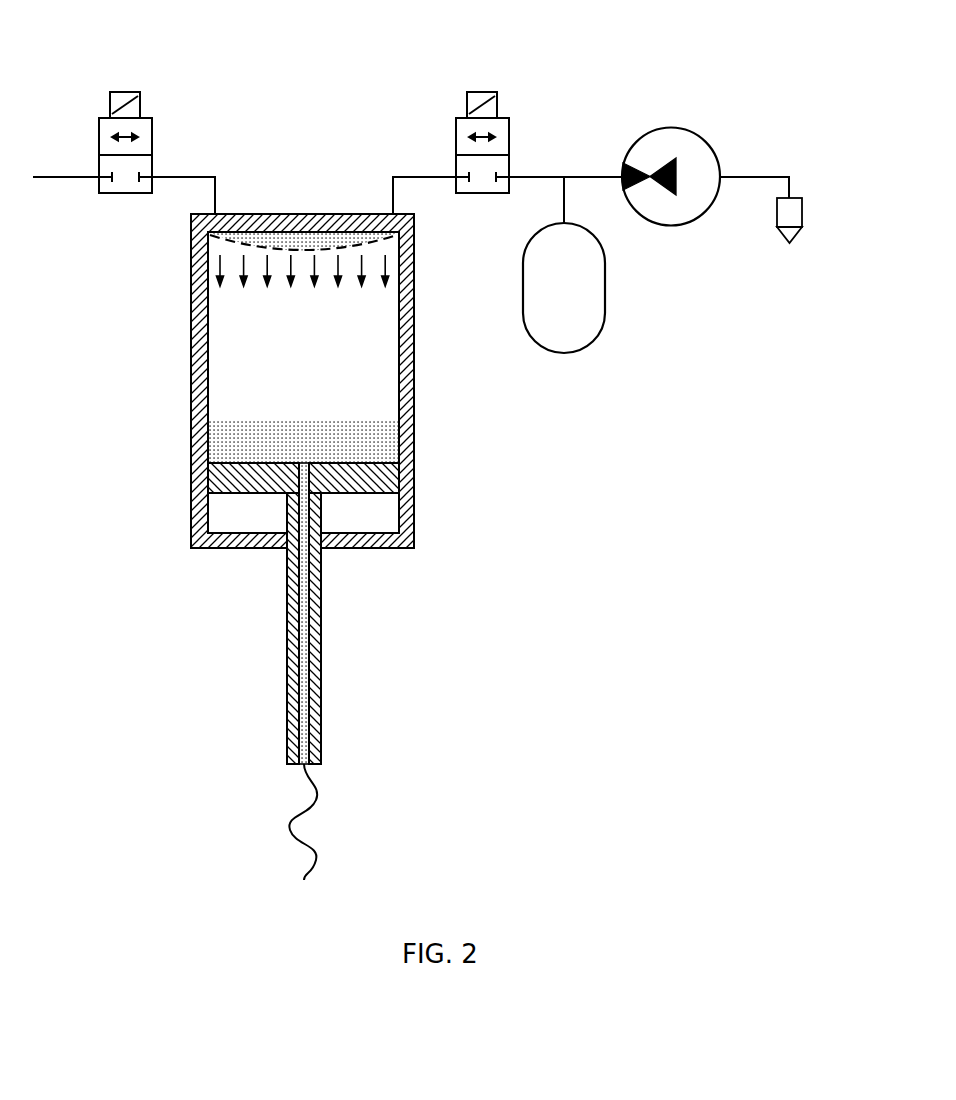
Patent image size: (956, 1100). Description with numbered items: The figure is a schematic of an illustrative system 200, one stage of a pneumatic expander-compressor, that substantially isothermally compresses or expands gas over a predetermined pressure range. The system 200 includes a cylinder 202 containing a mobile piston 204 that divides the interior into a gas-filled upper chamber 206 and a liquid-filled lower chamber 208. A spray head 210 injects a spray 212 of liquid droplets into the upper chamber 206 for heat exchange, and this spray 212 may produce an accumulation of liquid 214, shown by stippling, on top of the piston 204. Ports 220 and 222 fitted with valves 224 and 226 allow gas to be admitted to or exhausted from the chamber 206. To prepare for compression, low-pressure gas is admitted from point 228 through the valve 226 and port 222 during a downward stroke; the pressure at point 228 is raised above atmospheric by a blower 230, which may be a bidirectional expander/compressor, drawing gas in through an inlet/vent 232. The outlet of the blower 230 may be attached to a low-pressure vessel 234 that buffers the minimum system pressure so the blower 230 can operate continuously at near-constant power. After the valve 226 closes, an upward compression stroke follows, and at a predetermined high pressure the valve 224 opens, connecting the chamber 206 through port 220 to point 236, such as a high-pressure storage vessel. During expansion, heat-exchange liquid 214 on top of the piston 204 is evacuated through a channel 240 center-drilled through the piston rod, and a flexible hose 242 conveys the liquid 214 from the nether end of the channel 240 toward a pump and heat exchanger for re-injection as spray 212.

The system 200 is at (150, 36).
The cylinder 202 is at (191, 360).
The piston 204 is at (212, 475).
The chamber 206 is at (387, 331).
The chamber 208 is at (387, 512).
The spray head 210 is at (303, 243).
The spray 212 is at (385, 259).
The liquid 214 is at (387, 441).
The port 220 is at (215, 213).
The port 222 is at (392, 213).
The valve 224 is at (100, 117).
The valve 226 is at (457, 117).
The point 228 is at (564, 174).
The blower 230 is at (672, 128).
The inlet/vent 232 is at (803, 210).
The low-pressure vessel 234 is at (605, 285).
The point 236 is at (60, 180).
The channel 240 is at (310, 637).
The flexible hose 242 is at (290, 822).